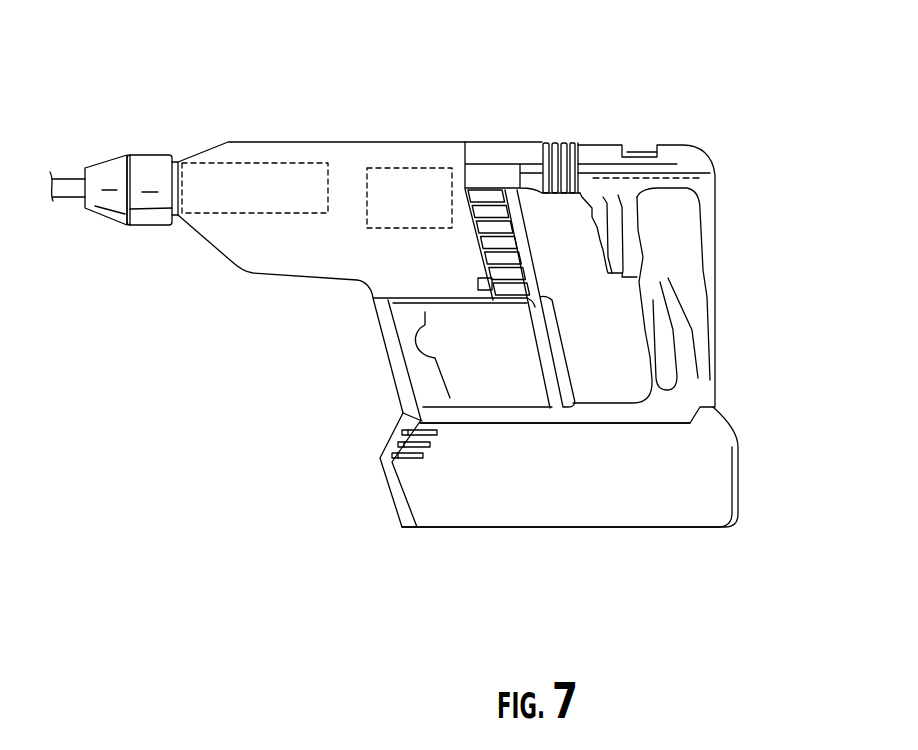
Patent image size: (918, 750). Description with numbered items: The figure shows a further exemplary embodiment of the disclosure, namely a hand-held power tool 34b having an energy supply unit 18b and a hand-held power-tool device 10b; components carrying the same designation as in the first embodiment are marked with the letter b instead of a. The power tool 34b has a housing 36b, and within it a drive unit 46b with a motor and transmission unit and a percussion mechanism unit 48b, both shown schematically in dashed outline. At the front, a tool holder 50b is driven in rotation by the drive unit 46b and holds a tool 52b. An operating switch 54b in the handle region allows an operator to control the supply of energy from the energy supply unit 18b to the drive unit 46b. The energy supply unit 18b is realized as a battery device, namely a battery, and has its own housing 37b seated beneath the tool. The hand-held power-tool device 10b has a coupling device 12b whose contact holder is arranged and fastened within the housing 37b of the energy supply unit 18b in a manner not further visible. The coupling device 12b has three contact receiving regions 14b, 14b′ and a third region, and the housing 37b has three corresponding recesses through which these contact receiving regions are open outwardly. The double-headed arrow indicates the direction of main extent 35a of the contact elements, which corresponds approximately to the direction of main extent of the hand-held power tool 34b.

The hand-held power-tool device 10b is at (439, 552).
The coupling device 12b is at (460, 466).
The contact receiving region 14b is at (398, 428).
The contact receiving region 14b′ is at (393, 442).
The energy supply unit 18b is at (717, 498).
The hand-held power tool 34b is at (547, 124).
The direction of main extent 35a is at (368, 558).
The housing 36b is at (340, 147).
The housing 37b is at (672, 517).
The drive unit 46b is at (410, 167).
The percussion mechanism unit 48b is at (255, 170).
The tool holder 50b is at (153, 168).
The tool 52b is at (68, 187).
The operating switch 54b is at (616, 243).